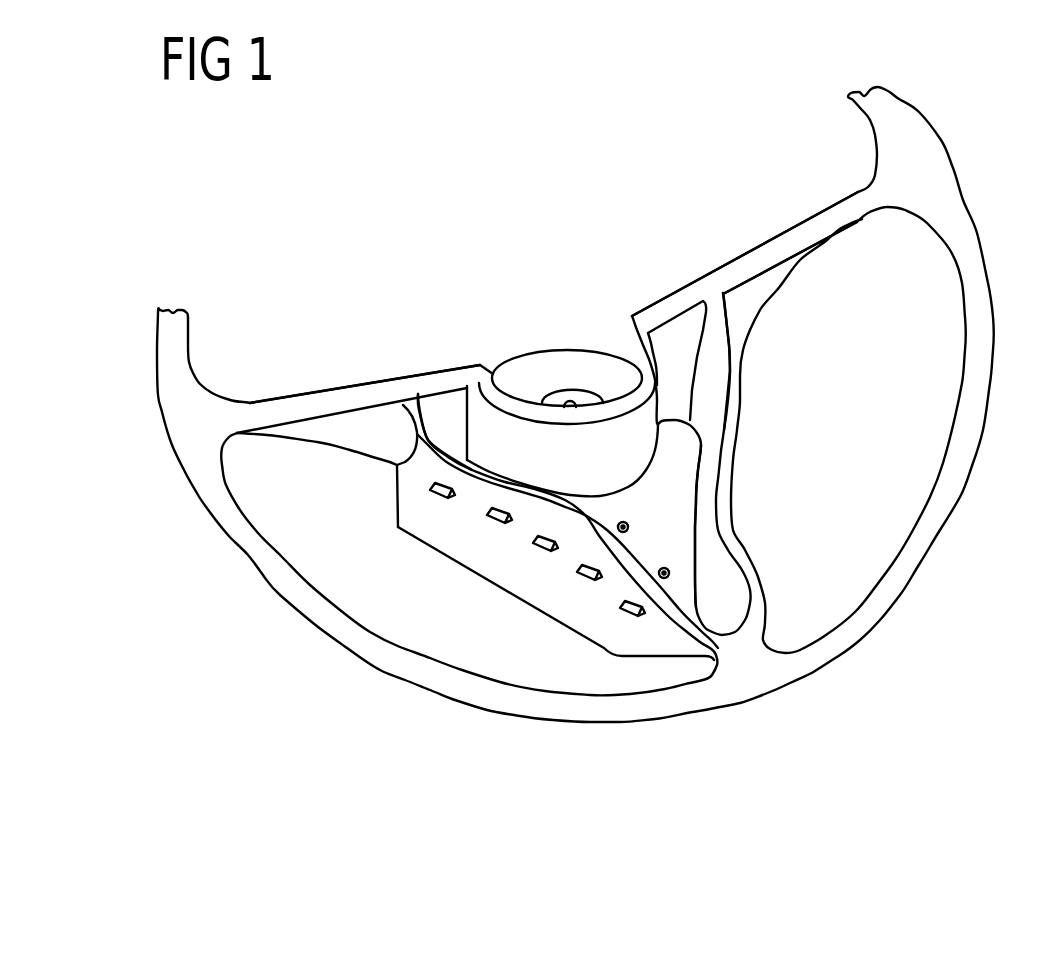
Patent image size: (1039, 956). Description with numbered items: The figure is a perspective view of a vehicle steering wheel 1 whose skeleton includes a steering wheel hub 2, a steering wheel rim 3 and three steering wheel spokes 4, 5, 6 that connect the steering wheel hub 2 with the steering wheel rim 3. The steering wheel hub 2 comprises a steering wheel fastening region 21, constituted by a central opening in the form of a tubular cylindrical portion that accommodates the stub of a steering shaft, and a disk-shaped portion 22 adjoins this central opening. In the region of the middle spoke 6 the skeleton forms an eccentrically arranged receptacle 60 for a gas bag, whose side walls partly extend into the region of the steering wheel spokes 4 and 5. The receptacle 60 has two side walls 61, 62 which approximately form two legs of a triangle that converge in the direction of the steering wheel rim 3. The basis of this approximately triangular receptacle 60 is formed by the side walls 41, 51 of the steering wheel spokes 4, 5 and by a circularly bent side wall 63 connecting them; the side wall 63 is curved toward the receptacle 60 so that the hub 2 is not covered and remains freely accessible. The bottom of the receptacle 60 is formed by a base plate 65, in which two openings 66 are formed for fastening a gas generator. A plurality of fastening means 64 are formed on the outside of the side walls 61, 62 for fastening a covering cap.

The vehicle steering wheel 1 is at (953, 103).
The steering wheel hub 2 is at (545, 350).
The steering wheel fastening region 21 is at (588, 387).
The hub boss 22 is at (567, 362).
The steering wheel rim 3 is at (978, 413).
The steering wheel spoke 4 is at (345, 403).
The side wall of steering wheel spoke 41 is at (438, 400).
The steering wheel spoke 5 is at (812, 228).
The side wall of steering wheel spoke 51 is at (683, 330).
The steering wheel spoke 6 is at (708, 528).
The receptacle 60 is at (670, 486).
The side wall 61 is at (710, 391).
The side wall 62 is at (485, 555).
The circularly bent side wall 63 is at (497, 422).
The fastening means 64 is at (577, 575).
The base plate 65 is at (683, 512).
The openings 66 is at (670, 573).